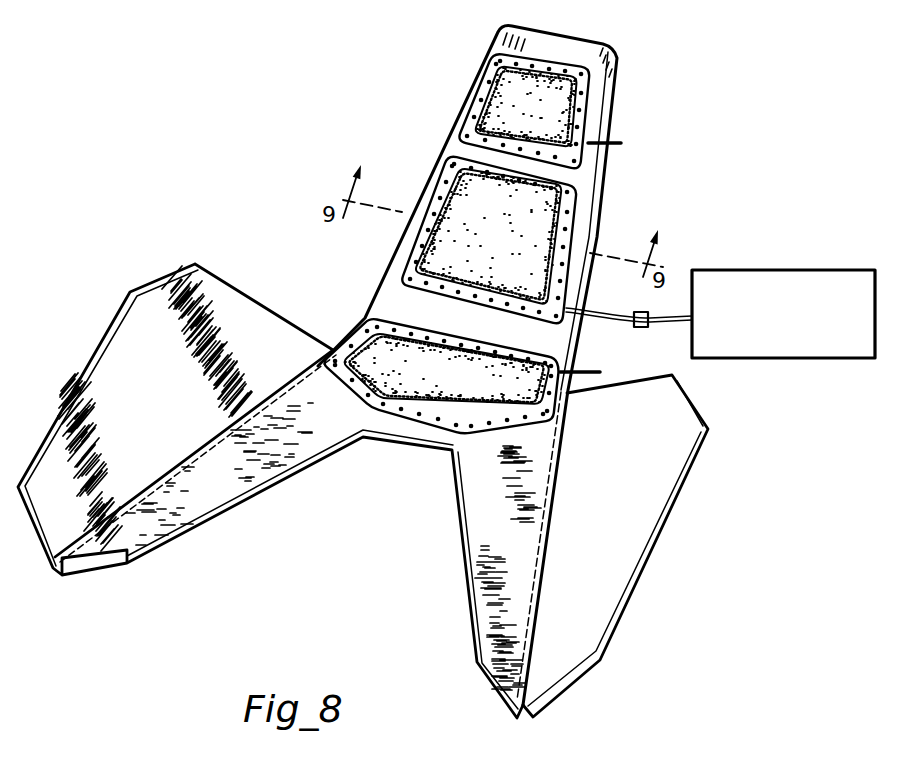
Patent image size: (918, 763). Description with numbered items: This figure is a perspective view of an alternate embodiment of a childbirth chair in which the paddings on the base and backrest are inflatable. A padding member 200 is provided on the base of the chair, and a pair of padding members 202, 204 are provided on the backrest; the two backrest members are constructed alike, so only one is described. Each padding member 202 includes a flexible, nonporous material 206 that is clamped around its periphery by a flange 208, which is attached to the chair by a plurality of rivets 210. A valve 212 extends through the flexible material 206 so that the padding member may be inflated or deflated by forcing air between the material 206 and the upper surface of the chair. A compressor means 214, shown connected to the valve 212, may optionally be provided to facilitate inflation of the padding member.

The padding member 200 is at (417, 396).
The padding member 202 is at (572, 190).
The padding member 204 is at (582, 104).
The flexible, nonporous material 206 is at (428, 240).
The flange 208 is at (447, 163).
The rivets 210 is at (387, 293).
The valve 212 is at (621, 143).
The compressor means 214 is at (792, 268).